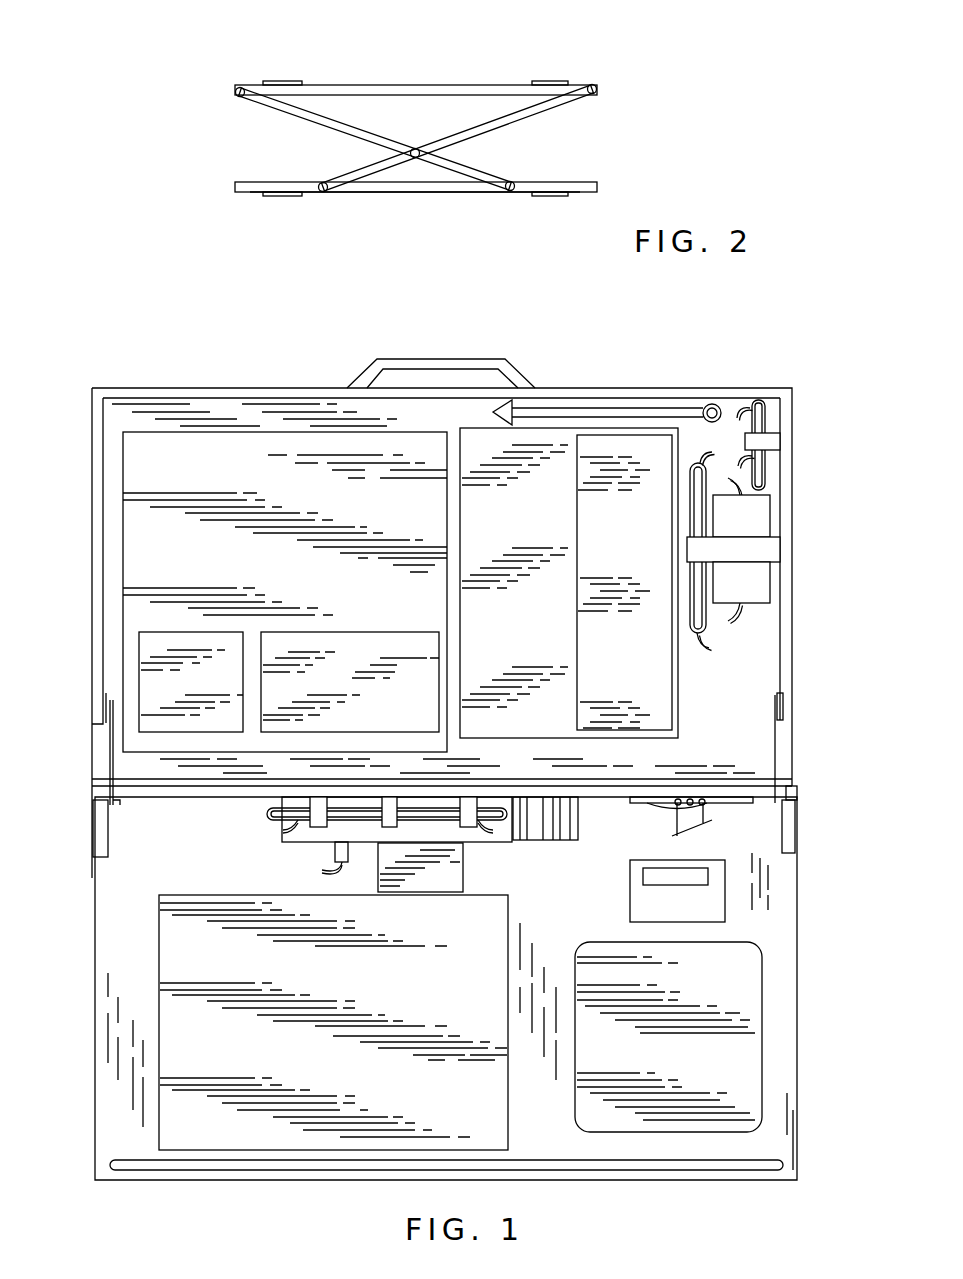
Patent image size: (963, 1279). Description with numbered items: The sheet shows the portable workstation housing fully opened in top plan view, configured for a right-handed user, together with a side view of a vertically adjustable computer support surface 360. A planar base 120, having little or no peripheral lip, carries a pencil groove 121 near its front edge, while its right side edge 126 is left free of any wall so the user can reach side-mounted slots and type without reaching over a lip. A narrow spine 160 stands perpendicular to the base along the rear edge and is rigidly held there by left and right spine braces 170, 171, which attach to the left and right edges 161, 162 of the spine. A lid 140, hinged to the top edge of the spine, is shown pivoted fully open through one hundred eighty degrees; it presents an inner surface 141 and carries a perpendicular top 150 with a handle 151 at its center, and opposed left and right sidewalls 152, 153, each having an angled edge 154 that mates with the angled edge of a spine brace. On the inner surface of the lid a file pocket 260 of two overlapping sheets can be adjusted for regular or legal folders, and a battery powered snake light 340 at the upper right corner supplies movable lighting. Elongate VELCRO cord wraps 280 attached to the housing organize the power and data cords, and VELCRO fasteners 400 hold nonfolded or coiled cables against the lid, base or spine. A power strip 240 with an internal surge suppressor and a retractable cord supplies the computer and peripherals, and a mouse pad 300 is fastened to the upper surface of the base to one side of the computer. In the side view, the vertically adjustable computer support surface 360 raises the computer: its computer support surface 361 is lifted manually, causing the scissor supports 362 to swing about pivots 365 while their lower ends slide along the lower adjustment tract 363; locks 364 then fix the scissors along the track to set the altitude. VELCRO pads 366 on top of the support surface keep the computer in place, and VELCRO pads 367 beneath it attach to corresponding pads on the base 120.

In FIG. 1, the base 120 is at (125, 957).
In FIG. 1, the pencil groove 121 is at (128, 1167).
In FIG. 1, the right side edge 126 is at (795, 948).
In FIG. 1, the lid 140 is at (603, 382).
In FIG. 1, the inner surface 141 is at (435, 400).
In FIG. 1, the top 150 is at (282, 387).
In FIG. 1, the handle 151 is at (412, 355).
In FIG. 1, the left sidewall 152 is at (120, 548).
In FIG. 1, the right sidewall 153 is at (777, 643).
In FIG. 1, the angled edge 154 is at (787, 745).
In FIG. 1, the spine 160 is at (210, 803).
In FIG. 1, the left edge 161 is at (92, 790).
In FIG. 1, the right edge 162 is at (798, 790).
In FIG. 1, the left spine brace 170 is at (100, 830).
In FIG. 1, the right spine brace 171 is at (792, 842).
In FIG. 1, the power strip 240 is at (555, 828).
In FIG. 1, the file pocket 260 is at (315, 568).
In FIG. 1, the cord wraps 280 is at (753, 553).
In FIG. 1, the mouse pad 300 is at (748, 1080).
In FIG. 1, the snake light 340 is at (642, 400).
In FIG. 1, the VELCRO fasteners 400 is at (652, 812).
In FIG. 2, the vertically adjustable computer support surface 360 is at (414, 170).
In FIG. 2, the computer support surface 361 is at (416, 86).
In FIG. 2, the scissor supports 362 is at (305, 123).
In FIG. 2, the lower adjustment tract 363 is at (442, 195).
In FIG. 2, the locks 364 is at (337, 200).
In FIG. 2, the pivots 365 is at (464, 155).
In FIG. 2, the VELCRO pads 366 is at (560, 80).
In FIG. 2, the VELCRO pads 367 is at (287, 205).